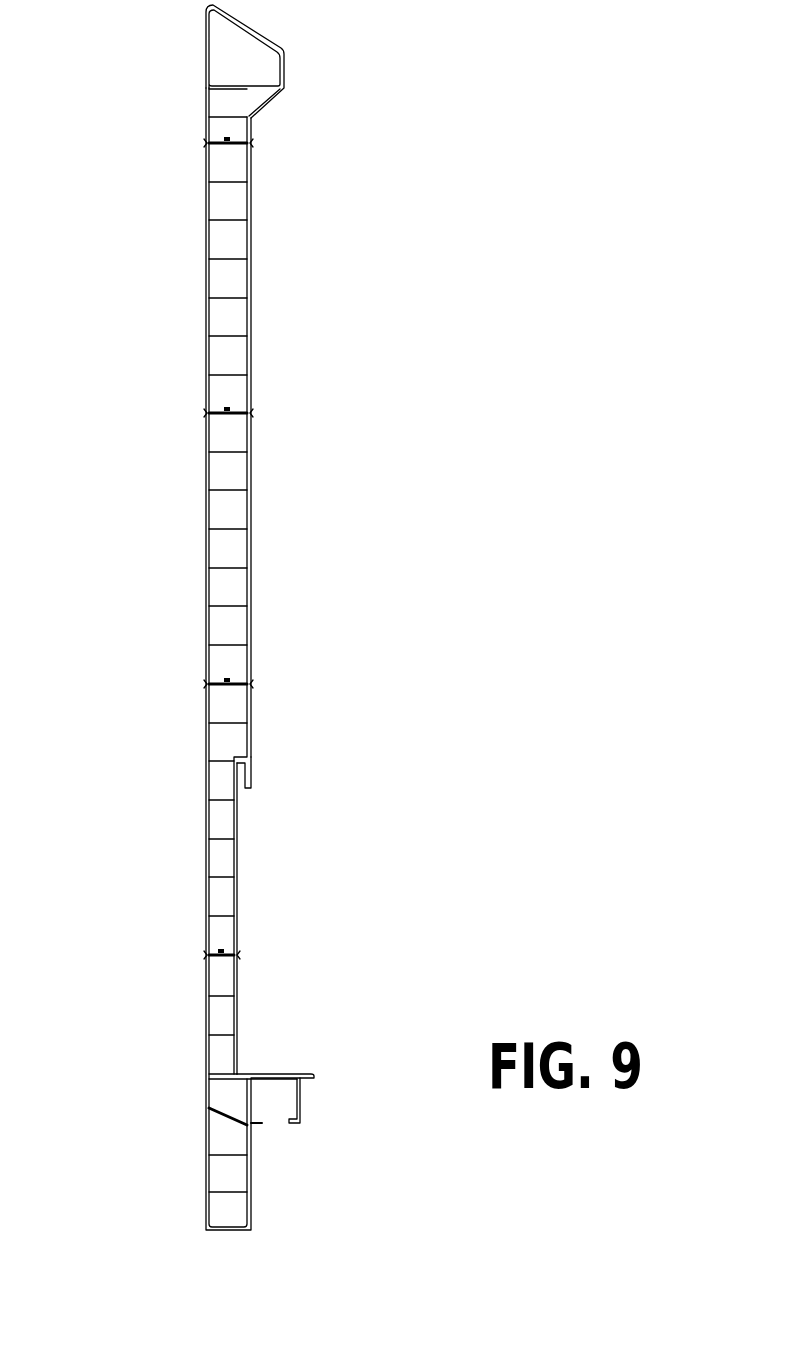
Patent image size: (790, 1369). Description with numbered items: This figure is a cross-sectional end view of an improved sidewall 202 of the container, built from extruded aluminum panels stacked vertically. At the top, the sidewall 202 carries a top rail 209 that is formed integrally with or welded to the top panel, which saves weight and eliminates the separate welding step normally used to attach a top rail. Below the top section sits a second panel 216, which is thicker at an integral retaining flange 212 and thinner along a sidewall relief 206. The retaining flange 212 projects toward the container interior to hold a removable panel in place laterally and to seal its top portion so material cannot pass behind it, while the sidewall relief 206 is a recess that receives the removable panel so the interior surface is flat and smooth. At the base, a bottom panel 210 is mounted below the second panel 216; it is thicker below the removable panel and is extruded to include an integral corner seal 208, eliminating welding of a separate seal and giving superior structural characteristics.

The sidewall 202 is at (188, 317).
The top rail 209 is at (283, 53).
The second panel 216 is at (223, 743).
The retaining flange 212 is at (250, 778).
The sidewall relief 206 is at (250, 922).
The bottom panel 210 is at (222, 1020).
The integral corner seal 208 is at (269, 1082).